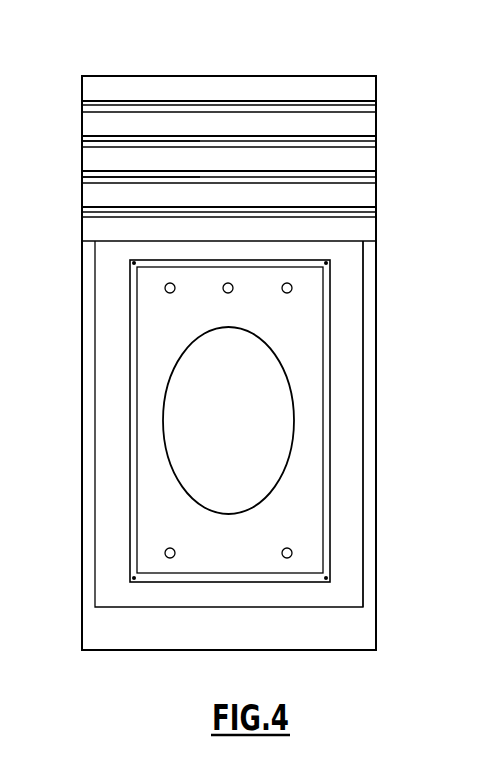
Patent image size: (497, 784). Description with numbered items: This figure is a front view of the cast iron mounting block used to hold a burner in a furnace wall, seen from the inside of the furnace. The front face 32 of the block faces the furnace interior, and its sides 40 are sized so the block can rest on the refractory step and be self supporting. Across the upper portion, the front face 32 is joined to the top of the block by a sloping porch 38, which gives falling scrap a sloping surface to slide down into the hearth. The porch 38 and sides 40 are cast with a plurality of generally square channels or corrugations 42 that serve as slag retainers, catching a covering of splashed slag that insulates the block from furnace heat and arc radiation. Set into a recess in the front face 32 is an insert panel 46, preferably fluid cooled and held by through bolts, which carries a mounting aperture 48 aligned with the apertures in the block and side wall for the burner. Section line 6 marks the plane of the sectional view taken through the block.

The section line 6- 6 is at (222, 48).
The front face 32 is at (352, 294).
The sloping porch 38 is at (378, 121).
The sides 40 is at (82, 328).
The channels or corrugations 42 is at (92, 141).
The insert panel 46 is at (308, 538).
The mounting aperture 48 is at (255, 358).